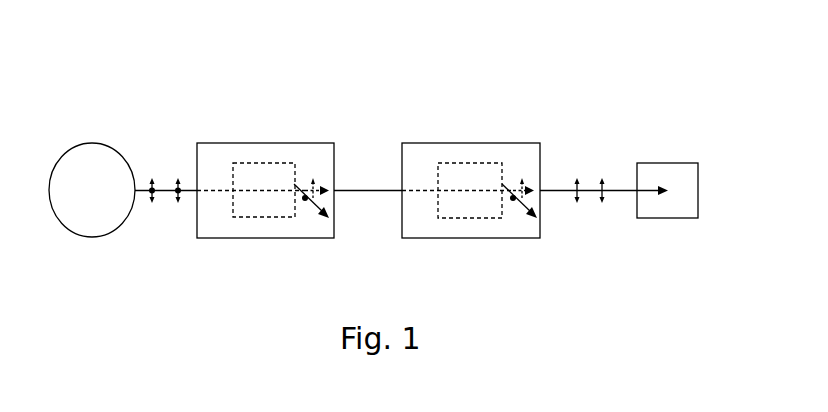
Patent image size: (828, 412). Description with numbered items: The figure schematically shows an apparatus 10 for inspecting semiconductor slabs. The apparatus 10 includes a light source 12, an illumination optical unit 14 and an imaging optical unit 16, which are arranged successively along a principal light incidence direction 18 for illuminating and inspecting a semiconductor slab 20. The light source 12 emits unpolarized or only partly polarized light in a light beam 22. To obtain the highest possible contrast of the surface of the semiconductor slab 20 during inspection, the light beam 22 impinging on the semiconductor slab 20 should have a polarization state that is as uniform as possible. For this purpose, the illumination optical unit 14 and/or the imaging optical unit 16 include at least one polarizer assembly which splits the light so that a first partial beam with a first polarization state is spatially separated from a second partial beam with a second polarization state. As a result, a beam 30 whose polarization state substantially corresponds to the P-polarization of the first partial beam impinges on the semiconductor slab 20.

The apparatus for inspecting semiconductor slabs 10 is at (378, 112).
The light source 12 is at (80, 162).
The illumination optical unit 14 is at (212, 157).
The imaging optical unit 16 is at (538, 156).
The principal light incidence direction 18 is at (170, 191).
The semiconductor slab 20 is at (678, 177).
The light beam 22 is at (194, 191).
The beam 30 is at (592, 190).